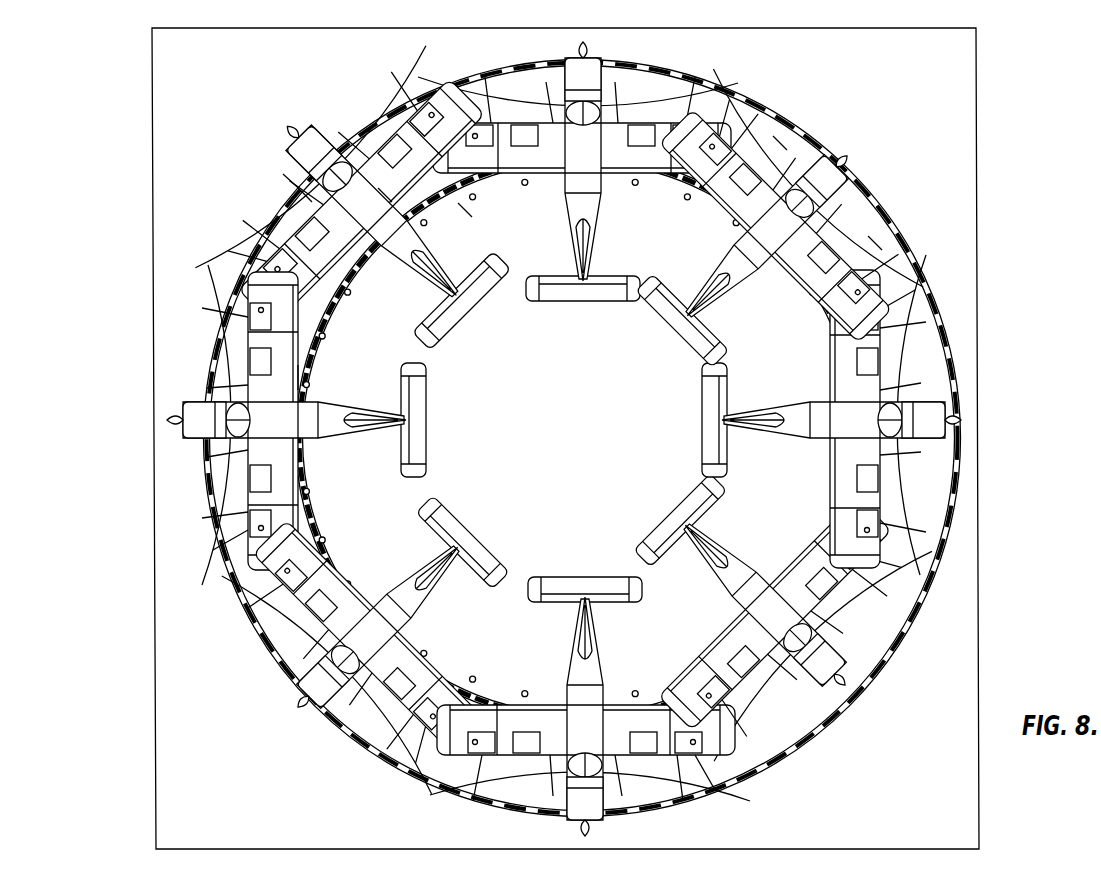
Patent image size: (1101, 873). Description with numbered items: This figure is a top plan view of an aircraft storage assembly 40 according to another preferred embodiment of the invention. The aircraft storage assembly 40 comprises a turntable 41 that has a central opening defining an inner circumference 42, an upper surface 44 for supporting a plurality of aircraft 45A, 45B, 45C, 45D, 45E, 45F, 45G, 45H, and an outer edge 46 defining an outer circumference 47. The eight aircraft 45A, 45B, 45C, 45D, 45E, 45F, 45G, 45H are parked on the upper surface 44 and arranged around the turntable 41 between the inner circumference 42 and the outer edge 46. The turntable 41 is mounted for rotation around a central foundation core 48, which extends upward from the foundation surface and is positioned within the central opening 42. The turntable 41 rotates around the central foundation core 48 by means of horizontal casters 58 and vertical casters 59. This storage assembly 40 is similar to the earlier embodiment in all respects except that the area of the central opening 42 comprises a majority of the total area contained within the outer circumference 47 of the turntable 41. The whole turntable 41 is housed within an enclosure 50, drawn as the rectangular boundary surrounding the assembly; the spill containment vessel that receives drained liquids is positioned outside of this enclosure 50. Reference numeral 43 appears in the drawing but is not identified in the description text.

The aircraft storage assembly 40 is at (612, 429).
The turntable 41 is at (875, 243).
The inner circumference 42 is at (385, 195).
The wing root 43 is at (298, 377).
The upper surface 44 is at (780, 143).
The aircraft 45A is at (587, 78).
The aircraft 45B is at (313, 153).
The aircraft 45C is at (260, 423).
The aircraft 45D is at (317, 710).
The aircraft 45E is at (565, 790).
The aircraft 45F is at (782, 655).
The aircraft 45G is at (908, 418).
The aircraft 45H is at (813, 187).
The outer edge 46 is at (297, 187).
The outer circumference 47 is at (250, 253).
The central foundation core 48 is at (465, 210).
The enclosure 50 is at (152, 238).
The horizontal casters 58 is at (420, 245).
The vertical casters 59 is at (293, 222).